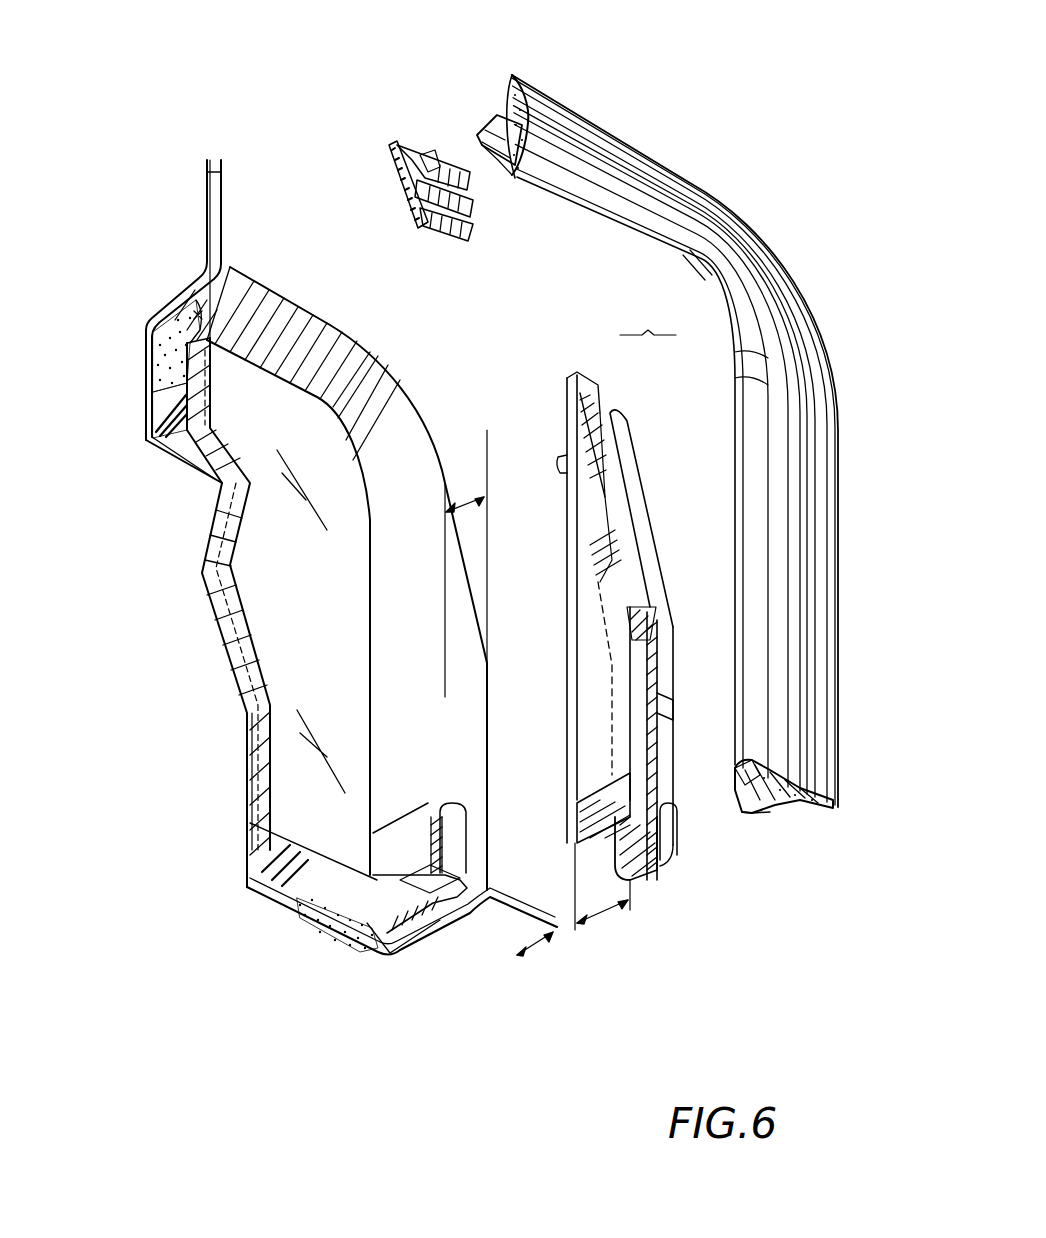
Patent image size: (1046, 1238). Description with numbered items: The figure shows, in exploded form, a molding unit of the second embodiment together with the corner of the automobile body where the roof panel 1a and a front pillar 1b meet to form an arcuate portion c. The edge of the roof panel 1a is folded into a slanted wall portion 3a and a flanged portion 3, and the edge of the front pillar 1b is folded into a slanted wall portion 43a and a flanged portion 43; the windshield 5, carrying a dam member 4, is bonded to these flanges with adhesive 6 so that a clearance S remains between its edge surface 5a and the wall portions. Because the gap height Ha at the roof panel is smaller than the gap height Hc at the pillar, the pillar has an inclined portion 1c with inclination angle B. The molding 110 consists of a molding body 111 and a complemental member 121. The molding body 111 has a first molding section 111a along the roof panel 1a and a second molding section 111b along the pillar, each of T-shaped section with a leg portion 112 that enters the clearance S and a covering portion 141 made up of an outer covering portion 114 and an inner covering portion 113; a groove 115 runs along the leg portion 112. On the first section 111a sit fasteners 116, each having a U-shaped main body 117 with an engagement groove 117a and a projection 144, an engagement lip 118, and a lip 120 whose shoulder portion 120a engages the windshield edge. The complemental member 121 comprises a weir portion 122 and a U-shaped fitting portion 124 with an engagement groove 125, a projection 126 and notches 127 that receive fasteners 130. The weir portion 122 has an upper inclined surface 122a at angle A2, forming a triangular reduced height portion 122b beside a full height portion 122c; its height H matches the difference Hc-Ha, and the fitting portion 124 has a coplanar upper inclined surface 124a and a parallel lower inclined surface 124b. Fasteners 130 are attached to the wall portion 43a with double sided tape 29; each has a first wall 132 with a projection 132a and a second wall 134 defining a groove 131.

The roof panel 1a is at (217, 208).
The front pillar 1b is at (503, 940).
The inclined portion 1c is at (463, 560).
The flanged portion 3 is at (145, 370).
The slanted wall portion 3a is at (187, 327).
The dam member 4 is at (145, 415).
The windshield 5 is at (277, 625).
The edge surface 5a is at (155, 313).
The adhesive 6 is at (157, 337).
The double sided tape 29 is at (507, 953).
The flanged portion 43 is at (337, 927).
The slanted wall portion 43a is at (505, 960).
The molding 110 is at (643, 320).
The molding body 111 is at (730, 398).
The first molding section 111a is at (600, 118).
The second molding section 111b is at (843, 648).
The leg portion 112 is at (520, 173).
The inner covering portion 113 is at (533, 165).
The outer covering portion 114 is at (512, 78).
The groove 115 is at (507, 117).
The fastener 116 is at (383, 190).
The main body 117 is at (397, 220).
The engagement groove 117a is at (447, 162).
The engagement lip 118 is at (392, 145).
The lip 120 is at (417, 217).
The shoulder portion 120a is at (443, 233).
The complemental member 121 is at (670, 602).
The weir portion 122 is at (590, 860).
The upper inclined surface 122a is at (598, 405).
The reduced height portion 122b is at (590, 455).
The full height portion 122c is at (593, 662).
The fitting portion 124 is at (620, 877).
The upper inclined surface 124a is at (640, 523).
The lower inclined surface 124b is at (595, 460).
The engagement groove 125 is at (663, 877).
The projection 126 is at (677, 833).
The notch 127 is at (655, 725).
The fastener 130 is at (470, 825).
The groove 131 is at (447, 923).
The first wall 132 is at (437, 887).
The projection 132a is at (463, 880).
The second wall 134 is at (412, 923).
The covering portion 141 is at (523, 130).
The projection 144 is at (438, 152).
The gap height Ha is at (214, 170).
The gap height Hc is at (520, 940).
The gap height difference Hc-Ha is at (460, 497).
The height of weir portion H is at (620, 944).
The inclination angle B is at (453, 580).
The inclination angle A2 is at (617, 520).
The clearance S is at (197, 310).
The arcuate portion c is at (397, 377).